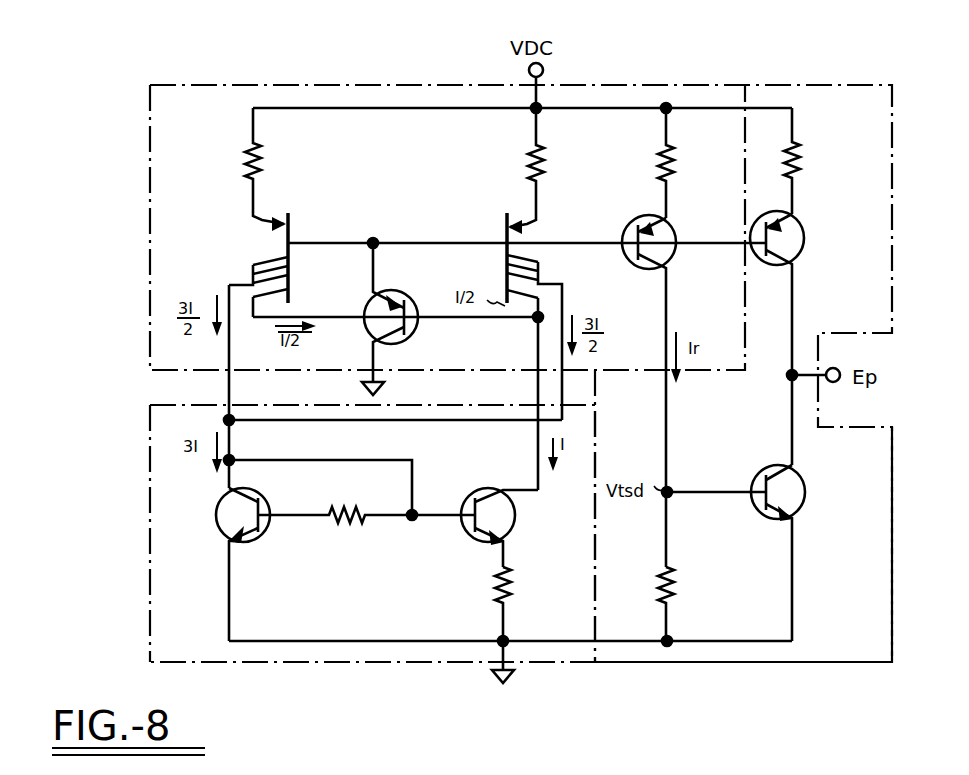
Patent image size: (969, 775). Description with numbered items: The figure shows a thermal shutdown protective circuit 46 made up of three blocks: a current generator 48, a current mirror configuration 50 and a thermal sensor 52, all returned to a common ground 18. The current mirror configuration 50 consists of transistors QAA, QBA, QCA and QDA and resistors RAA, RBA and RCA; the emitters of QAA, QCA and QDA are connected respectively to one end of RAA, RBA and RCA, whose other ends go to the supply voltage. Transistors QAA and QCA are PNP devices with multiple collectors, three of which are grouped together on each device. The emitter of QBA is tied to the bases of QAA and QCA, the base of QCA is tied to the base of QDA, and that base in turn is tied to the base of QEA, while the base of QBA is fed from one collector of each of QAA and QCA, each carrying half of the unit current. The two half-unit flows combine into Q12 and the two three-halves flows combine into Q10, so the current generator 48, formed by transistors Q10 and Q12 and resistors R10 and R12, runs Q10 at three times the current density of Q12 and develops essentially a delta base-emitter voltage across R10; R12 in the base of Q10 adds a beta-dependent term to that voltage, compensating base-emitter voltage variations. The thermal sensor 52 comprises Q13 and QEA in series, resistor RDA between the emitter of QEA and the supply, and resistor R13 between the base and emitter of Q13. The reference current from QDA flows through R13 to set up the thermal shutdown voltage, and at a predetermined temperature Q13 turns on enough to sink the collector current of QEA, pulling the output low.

The protective circuit 46 is at (806, 58).
The current generator 48 is at (150, 440).
The current mirror configuration 50 is at (333, 85).
The thermal sensor 52 is at (850, 662).
The ground terminal 18 is at (512, 679).
The resistor RAA is at (277, 169).
The resistor RBA is at (551, 171).
The resistor RCA is at (689, 163).
The resistor RDA is at (817, 161).
The transistor QAA is at (286, 265).
The transistor QBA is at (412, 319).
The transistor QCA is at (501, 351).
The transistor QDA is at (673, 391).
The transistor QEA is at (800, 338).
The transistor Q10 is at (217, 564).
The transistor Q12 is at (513, 527).
The transistor Q13 is at (759, 553).
The resistor R10 is at (526, 604).
The resistor R12 is at (366, 534).
The resistor R13 is at (688, 604).